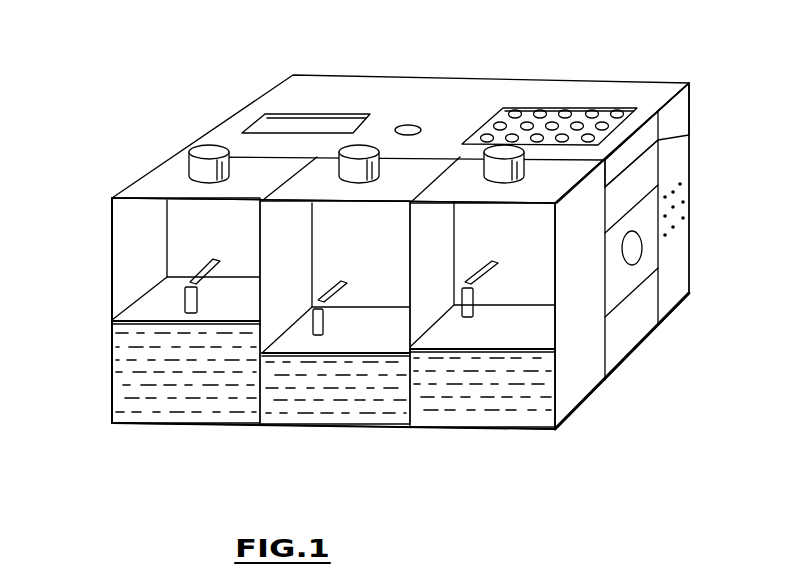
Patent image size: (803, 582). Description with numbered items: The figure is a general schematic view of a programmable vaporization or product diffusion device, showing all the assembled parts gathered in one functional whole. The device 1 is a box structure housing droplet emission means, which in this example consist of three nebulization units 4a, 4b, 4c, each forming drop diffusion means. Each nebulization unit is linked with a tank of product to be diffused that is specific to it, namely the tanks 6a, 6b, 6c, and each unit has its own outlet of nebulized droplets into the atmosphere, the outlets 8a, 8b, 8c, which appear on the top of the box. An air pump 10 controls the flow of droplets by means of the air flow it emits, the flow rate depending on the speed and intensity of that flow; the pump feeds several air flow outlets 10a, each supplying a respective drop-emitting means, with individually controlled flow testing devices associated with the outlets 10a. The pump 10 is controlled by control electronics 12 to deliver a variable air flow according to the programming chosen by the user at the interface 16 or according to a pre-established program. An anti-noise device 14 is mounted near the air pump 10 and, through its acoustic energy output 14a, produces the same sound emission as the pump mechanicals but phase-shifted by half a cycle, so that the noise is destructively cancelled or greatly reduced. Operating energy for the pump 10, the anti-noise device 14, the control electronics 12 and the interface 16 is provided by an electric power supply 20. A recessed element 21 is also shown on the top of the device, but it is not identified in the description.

The device 1 is at (76, 368).
The nebulization unit 4a is at (128, 262).
The nebulization unit 4b is at (372, 338).
The nebulization unit 4c is at (512, 337).
The tank of product to be diffused 6a is at (197, 392).
The tank of product to be diffused 6b is at (333, 395).
The tank of product to be diffused 6c is at (475, 397).
The outlet of nebulized droplets 8a is at (203, 148).
The outlet of nebulized droplets 8b is at (366, 148).
The outlet of nebulized droplets 8c is at (498, 150).
The air pump 10 is at (640, 272).
The air flow outlet 10a is at (636, 250).
The control electronics 12 is at (647, 157).
The anti-noise device 14 is at (678, 157).
The acoustic energy output 14a is at (682, 198).
The interface 16 is at (442, 100).
The electric power supply 20 is at (644, 364).
The recess on top cover 21 is at (279, 123).